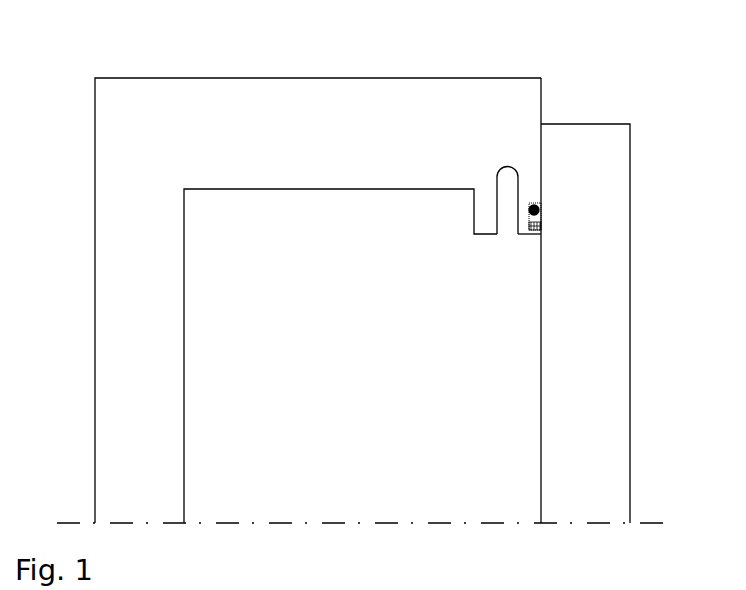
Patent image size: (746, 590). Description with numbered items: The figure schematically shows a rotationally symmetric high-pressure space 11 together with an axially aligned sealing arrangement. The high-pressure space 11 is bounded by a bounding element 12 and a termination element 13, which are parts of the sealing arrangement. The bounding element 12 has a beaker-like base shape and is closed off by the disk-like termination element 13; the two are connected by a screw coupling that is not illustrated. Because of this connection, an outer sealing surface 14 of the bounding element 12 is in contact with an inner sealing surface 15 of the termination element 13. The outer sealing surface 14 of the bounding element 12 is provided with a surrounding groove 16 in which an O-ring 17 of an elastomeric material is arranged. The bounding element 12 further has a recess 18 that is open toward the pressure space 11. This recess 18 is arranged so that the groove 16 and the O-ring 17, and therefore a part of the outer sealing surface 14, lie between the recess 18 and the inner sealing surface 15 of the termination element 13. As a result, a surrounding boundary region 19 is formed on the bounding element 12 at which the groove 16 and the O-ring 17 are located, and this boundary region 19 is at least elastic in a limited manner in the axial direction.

The high-pressure space 11 is at (415, 414).
The bounding element 12 is at (153, 77).
The termination element 13 is at (614, 492).
The outer sealing surface 14 is at (538, 178).
The inner sealing surface 15 is at (541, 155).
The surrounding groove 16 is at (540, 218).
The O-ring 17 is at (540, 207).
The recess 18 is at (507, 217).
The boundary region 19 is at (541, 227).